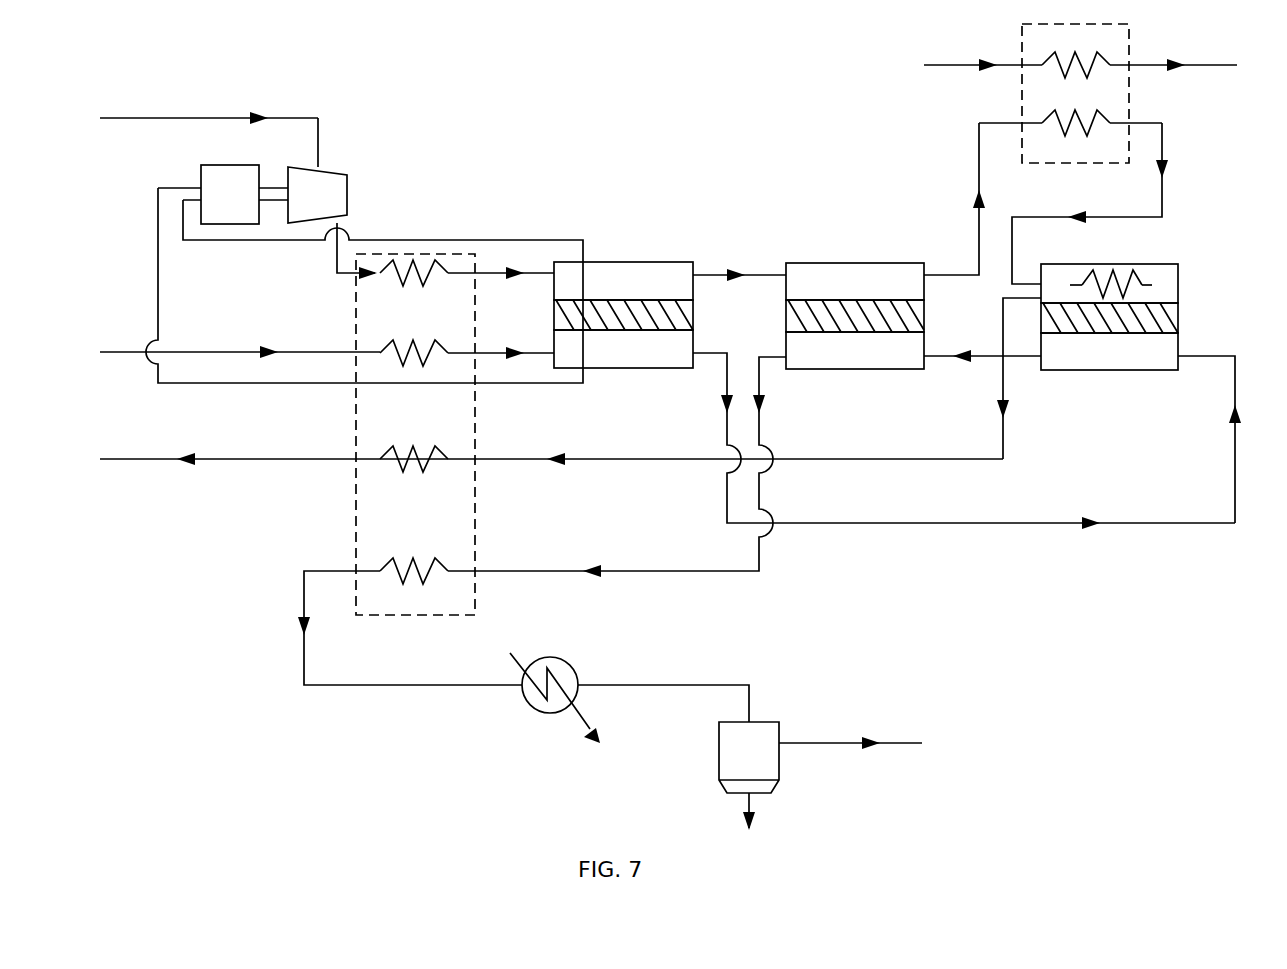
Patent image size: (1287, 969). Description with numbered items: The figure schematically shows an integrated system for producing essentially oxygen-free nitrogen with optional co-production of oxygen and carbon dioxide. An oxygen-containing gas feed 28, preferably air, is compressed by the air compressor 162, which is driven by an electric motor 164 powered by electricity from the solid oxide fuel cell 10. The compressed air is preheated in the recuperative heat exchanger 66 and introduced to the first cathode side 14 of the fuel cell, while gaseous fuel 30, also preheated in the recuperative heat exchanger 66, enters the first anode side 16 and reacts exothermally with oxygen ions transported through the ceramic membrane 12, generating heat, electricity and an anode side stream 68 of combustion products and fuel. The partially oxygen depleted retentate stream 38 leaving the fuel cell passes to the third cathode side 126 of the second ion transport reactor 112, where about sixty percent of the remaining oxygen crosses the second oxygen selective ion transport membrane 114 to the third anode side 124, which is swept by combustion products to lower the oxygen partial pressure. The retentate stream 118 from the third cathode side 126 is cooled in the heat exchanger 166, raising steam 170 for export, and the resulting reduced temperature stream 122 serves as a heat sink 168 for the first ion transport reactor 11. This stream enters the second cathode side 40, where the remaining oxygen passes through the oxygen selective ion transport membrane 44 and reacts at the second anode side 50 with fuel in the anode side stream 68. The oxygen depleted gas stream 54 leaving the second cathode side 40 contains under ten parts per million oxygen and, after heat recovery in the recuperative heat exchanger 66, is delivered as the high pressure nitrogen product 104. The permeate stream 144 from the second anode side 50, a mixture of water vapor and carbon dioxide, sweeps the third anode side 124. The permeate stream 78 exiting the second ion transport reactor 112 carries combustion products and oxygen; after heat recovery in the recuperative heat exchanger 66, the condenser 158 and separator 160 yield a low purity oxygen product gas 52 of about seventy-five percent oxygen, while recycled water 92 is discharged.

The solid oxide fuel cell 10 is at (647, 292).
The first ion transport reactor 11 is at (1140, 295).
The ceramic membrane 12 is at (686, 314).
The first cathode side 14 is at (658, 298).
The first anode side 16 is at (640, 320).
The oxygen-containing gas feed 28 is at (143, 120).
The gaseous fuel 30 is at (137, 353).
The partially oxygen depleted retentate stream 38 is at (755, 273).
The second cathode side 40 is at (1160, 303).
The oxygen selective ion transport membrane 44 is at (1172, 322).
The second anode side 50 is at (1055, 332).
The low purity oxygen product gas 52 is at (827, 745).
The oxygen depleted gas stream 54 is at (1003, 448).
The recuperative heat exchanger 66 is at (390, 512).
The anode side stream 68 is at (727, 432).
The permeate stream 78 is at (759, 430).
The recycled water 92 is at (755, 800).
The high pressure nitrogen product 104 is at (108, 459).
The second ion transport reactor 112 is at (884, 284).
The second oxygen selective ion transport membrane 114 is at (903, 320).
The retentate stream 118 is at (979, 172).
The reduced temperature stream 122 is at (1163, 179).
The third anode side 124 is at (867, 332).
The third cathode side 126 is at (900, 302).
The permeate stream 144 is at (983, 360).
The condenser 158 is at (565, 672).
The separator 160 is at (735, 750).
The air compressor 162 is at (325, 190).
The electric motor 164 is at (222, 178).
The heat exchanger 166 is at (1113, 98).
The heat sink 168 is at (1093, 283).
The steam 170 is at (1202, 65).